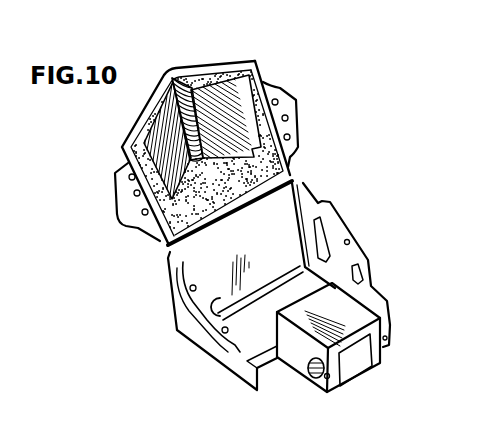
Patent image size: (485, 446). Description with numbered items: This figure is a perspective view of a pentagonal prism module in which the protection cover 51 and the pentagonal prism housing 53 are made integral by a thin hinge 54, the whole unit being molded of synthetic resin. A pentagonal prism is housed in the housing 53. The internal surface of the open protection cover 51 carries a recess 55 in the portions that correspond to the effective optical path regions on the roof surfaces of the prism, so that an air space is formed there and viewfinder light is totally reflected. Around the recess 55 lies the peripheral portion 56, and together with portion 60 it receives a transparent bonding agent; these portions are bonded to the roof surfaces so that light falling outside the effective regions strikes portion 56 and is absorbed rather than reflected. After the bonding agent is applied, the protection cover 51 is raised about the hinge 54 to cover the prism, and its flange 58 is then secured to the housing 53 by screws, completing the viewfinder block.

The protection cover 51 is at (288, 125).
The pentagonal prism housing 53 is at (355, 250).
The thin hinge 54 is at (290, 179).
The recess 55 is at (212, 98).
The peripheral portion 56 is at (155, 100).
The flange 58 is at (128, 200).
The bonding portion 60 is at (220, 200).